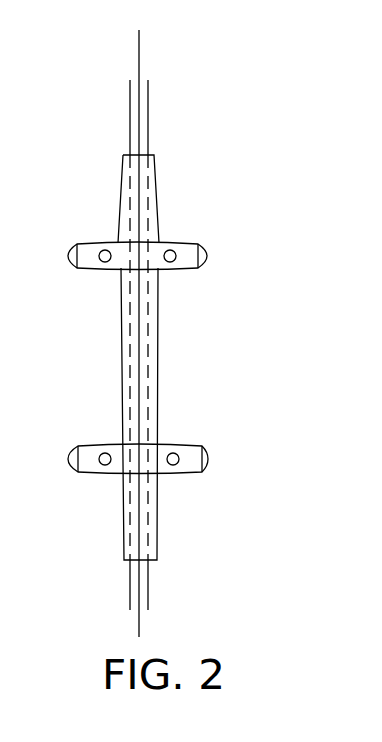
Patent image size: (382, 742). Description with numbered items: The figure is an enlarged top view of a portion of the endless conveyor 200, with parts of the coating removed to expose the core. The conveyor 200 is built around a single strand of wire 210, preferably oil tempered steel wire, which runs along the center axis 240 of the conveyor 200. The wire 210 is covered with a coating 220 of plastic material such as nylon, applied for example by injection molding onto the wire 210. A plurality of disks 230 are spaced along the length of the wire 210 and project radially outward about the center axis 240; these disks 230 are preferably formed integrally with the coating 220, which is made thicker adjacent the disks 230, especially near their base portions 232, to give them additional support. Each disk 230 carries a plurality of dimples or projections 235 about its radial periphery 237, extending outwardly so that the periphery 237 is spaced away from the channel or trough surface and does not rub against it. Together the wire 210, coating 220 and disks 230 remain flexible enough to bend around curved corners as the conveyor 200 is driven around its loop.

The endless conveyor 200 is at (224, 161).
The wire 210 is at (143, 113).
The coating 220 is at (157, 208).
The disks 230 is at (178, 269).
The base portions 232 is at (173, 473).
The projections 235 is at (209, 456).
The radial peripheries 237 is at (192, 453).
The center axis 240 is at (140, 51).